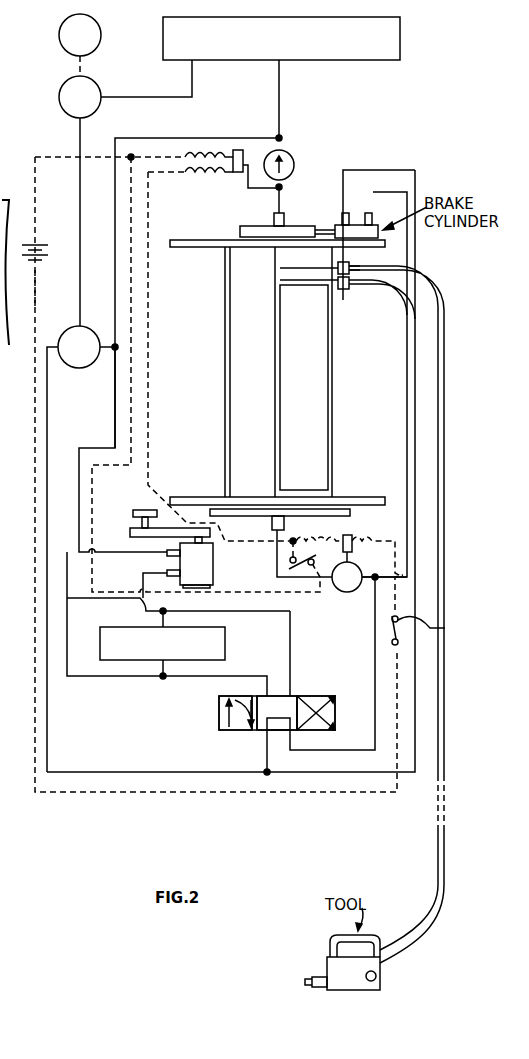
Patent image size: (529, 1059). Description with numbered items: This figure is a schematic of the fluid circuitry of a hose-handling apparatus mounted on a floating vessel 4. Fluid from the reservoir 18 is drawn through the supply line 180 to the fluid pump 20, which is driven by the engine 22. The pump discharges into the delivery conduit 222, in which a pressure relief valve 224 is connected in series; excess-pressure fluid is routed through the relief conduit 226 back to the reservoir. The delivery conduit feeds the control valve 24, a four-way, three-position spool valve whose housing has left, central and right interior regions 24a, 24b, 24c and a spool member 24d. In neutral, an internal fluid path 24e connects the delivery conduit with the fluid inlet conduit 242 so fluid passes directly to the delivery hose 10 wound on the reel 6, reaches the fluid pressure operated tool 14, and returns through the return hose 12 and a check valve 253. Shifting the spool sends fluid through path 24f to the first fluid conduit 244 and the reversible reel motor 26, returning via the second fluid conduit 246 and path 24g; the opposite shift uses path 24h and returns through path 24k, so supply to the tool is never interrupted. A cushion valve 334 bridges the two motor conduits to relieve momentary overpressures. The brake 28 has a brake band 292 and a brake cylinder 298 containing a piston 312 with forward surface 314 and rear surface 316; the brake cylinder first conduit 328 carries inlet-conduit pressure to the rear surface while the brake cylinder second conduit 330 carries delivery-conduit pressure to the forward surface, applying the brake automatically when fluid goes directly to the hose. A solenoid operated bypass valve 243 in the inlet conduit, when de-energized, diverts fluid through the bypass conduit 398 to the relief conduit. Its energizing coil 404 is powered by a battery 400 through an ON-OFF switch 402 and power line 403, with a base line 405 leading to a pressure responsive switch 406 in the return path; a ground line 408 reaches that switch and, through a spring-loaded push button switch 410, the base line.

The engine 22 is at (101, 38).
The fluid pump 20 is at (72, 114).
The supply line 180 is at (138, 98).
The reservoir 18 is at (400, 40).
The relief conduit 226 is at (283, 104).
The check valve 253 is at (293, 152).
The pressure responsive switch 406 is at (243, 150).
The ground line 408 is at (33, 163).
The delivery conduit 222 is at (78, 196).
The floating vessel 4 is at (5, 231).
The battery 400 is at (40, 247).
The power line 403 is at (36, 298).
The pressure relief valve 224 is at (75, 326).
The base line 405 is at (150, 312).
The bypass conduit 398 is at (114, 404).
The brake band 292 is at (252, 226).
The brake 28 is at (298, 220).
The reel 6 is at (300, 440).
The rear surface 316 is at (326, 258).
The brake cylinder 298 is at (342, 220).
The piston 312 is at (356, 220).
The forward surface 314 is at (363, 223).
The return hose 12 is at (383, 282).
The delivery hose 10 is at (374, 289).
The brake cylinder first conduit 328 is at (407, 387).
The brake cylinder second conduit 330 is at (417, 440).
The ON-OFF switch 402 is at (261, 471).
The reel motor 26 is at (206, 569).
The push button switch 410 is at (295, 541).
The energizing coil 404 is at (379, 532).
The bypass valve 243 is at (350, 554).
The fluid inlet conduit 242 is at (373, 641).
The cushion valve 334 is at (127, 626).
The first fluid conduit 244 is at (186, 678).
The second fluid conduit 246 is at (290, 624).
The control valve 24 is at (276, 711).
The left interior region 24a is at (237, 723).
The central interior region 24b is at (280, 690).
The right interior region 24c is at (333, 713).
The spool member 24d is at (278, 723).
The internal fluid path 24e is at (284, 740).
The interior path 24f is at (220, 715).
The path 24g is at (247, 695).
The path 24h is at (328, 707).
The path 24k is at (328, 732).
The fluid pressure operated tool 14 is at (333, 967).